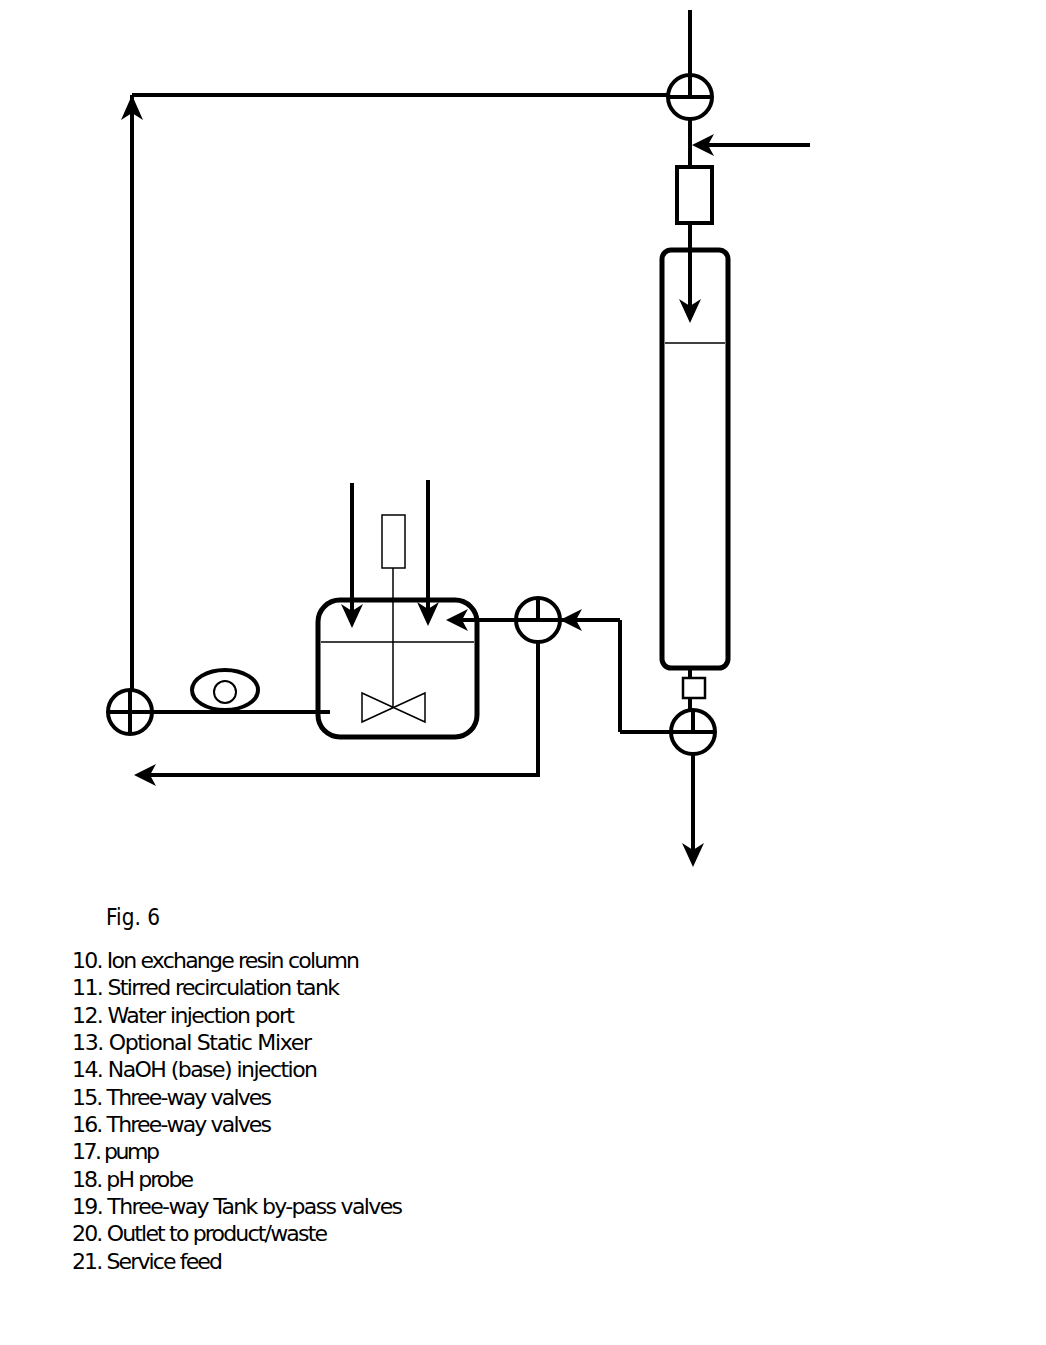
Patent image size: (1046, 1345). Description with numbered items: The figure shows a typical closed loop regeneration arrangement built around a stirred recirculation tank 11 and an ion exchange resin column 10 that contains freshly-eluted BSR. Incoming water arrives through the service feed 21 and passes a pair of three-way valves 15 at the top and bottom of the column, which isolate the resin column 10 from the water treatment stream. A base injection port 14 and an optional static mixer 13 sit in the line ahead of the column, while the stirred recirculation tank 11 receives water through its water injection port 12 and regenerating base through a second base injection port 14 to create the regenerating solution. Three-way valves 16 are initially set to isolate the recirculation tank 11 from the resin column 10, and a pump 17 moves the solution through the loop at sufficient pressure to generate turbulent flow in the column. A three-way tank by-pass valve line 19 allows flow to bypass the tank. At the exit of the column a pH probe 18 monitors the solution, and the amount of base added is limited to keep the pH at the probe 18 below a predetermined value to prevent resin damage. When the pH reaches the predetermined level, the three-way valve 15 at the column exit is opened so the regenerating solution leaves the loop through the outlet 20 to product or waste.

The ion exchange resin column 10 is at (695, 459).
The stirred recirculation tank 11 is at (397, 626).
The water injection port 12 is at (436, 532).
The optional static mixer 13 is at (724, 195).
The base injection port 14 is at (600, 377).
The three-way valves 15 is at (721, 415).
The three-way valves 16 is at (308, 635).
The pump 17 is at (228, 670).
The pH probe 18 is at (713, 688).
The three-way tank by-pass valves 19 is at (336, 738).
The outlet to product/waste 20 is at (721, 810).
The service feed 21 is at (718, 42).